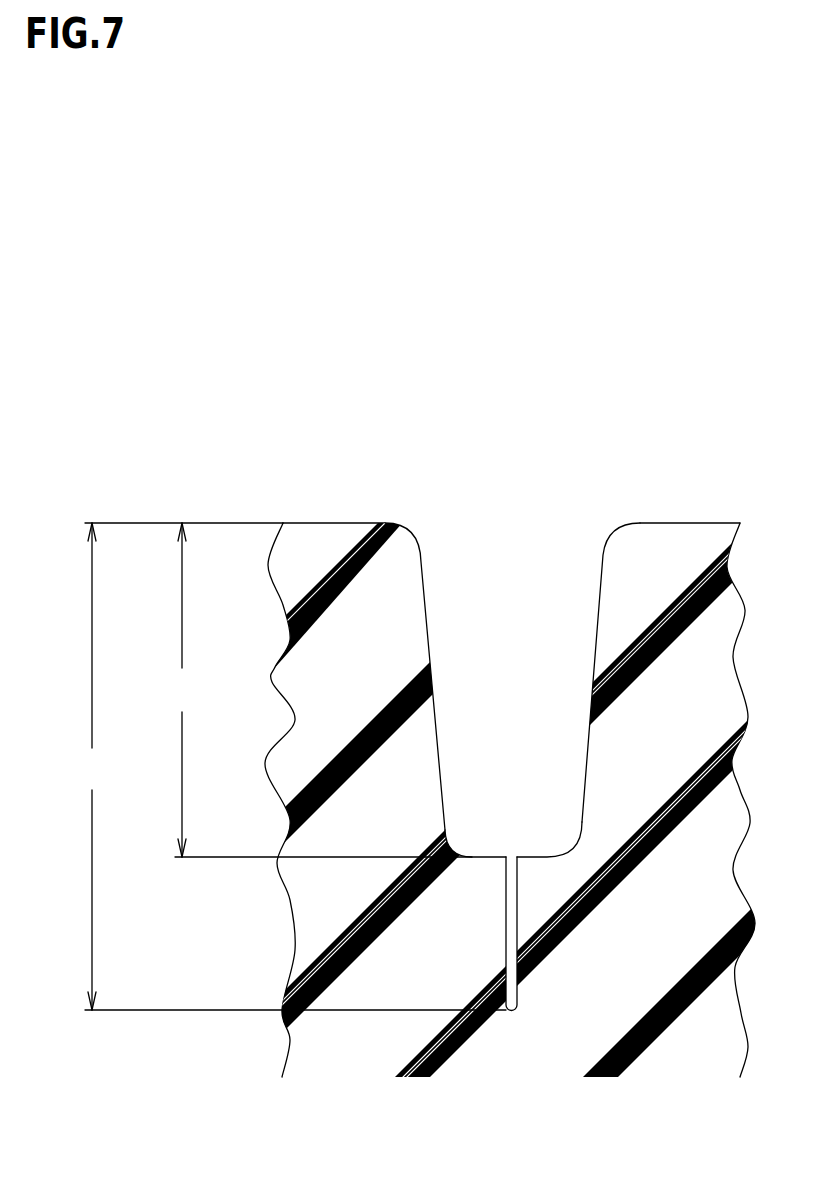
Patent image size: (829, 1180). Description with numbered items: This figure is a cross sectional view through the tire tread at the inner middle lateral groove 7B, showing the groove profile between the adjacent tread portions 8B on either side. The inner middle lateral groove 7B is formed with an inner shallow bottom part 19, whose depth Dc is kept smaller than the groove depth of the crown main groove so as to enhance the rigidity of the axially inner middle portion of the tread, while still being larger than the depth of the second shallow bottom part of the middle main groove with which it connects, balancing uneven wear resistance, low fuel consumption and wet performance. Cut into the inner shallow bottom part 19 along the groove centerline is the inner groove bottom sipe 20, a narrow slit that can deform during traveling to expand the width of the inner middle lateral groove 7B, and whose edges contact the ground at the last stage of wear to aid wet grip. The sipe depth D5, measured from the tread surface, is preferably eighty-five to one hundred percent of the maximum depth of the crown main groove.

The thread ridge / flank portion 8B is at (335, 504).
The inner middle lateral groove 7B is at (502, 514).
The inner shallow bottom part 19 is at (488, 852).
The inner groove bottom sipe 20 is at (513, 925).
The depth of inner groove bottom sipe D5 is at (289, 766).
The depth of inner shallow bottom part Dc is at (317, 690).